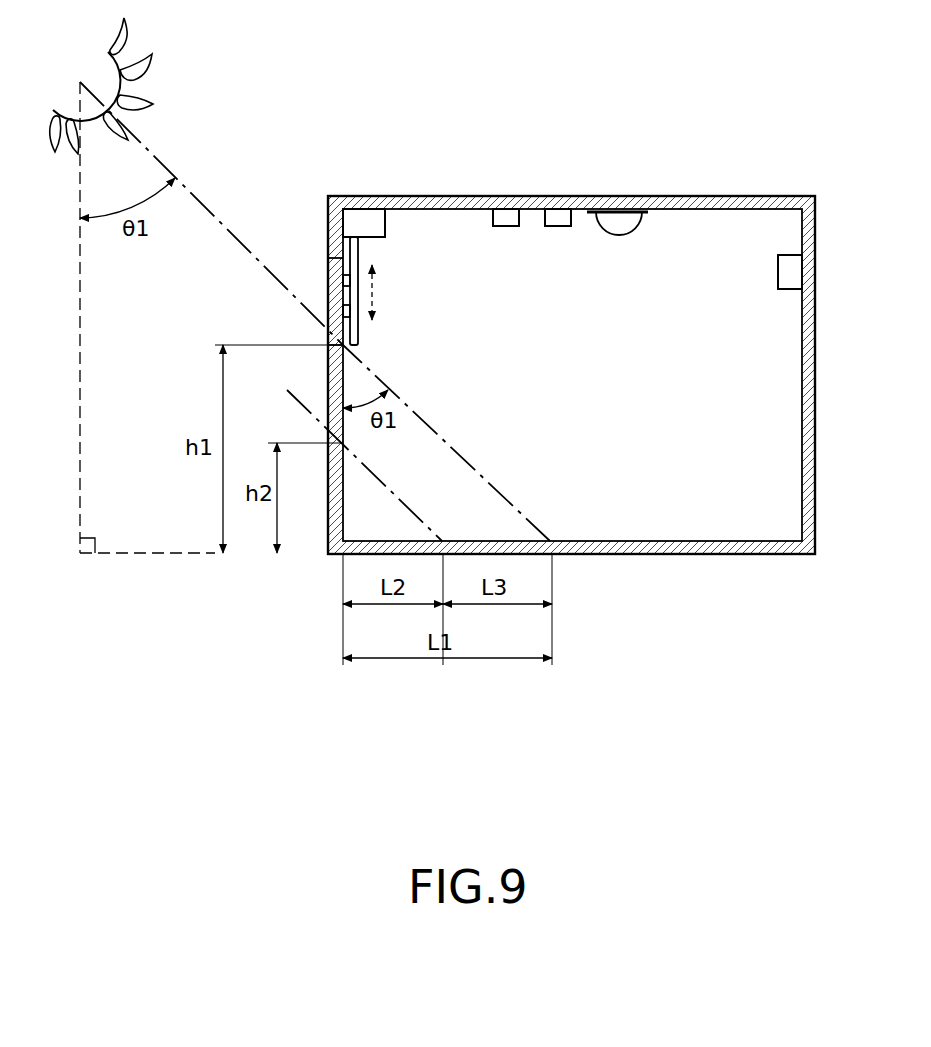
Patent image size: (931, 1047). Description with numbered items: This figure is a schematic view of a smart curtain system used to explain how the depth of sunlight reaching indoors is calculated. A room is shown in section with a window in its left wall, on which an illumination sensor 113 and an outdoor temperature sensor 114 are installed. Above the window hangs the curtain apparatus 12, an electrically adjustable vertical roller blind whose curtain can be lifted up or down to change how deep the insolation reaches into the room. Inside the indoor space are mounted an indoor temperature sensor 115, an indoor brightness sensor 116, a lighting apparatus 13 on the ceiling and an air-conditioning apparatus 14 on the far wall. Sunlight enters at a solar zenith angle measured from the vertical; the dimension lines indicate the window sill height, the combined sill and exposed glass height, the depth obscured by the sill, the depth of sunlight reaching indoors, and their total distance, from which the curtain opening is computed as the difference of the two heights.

The curtain apparatus 12 is at (387, 230).
The lighting apparatus 13 is at (614, 220).
The air-conditioning apparatus 14 is at (790, 265).
The illumination sensor 113 is at (343, 311).
The outdoor temperature sensor 114 is at (343, 280).
The indoor temperature sensor 115 is at (509, 218).
The indoor brightness sensor 116 is at (560, 218).